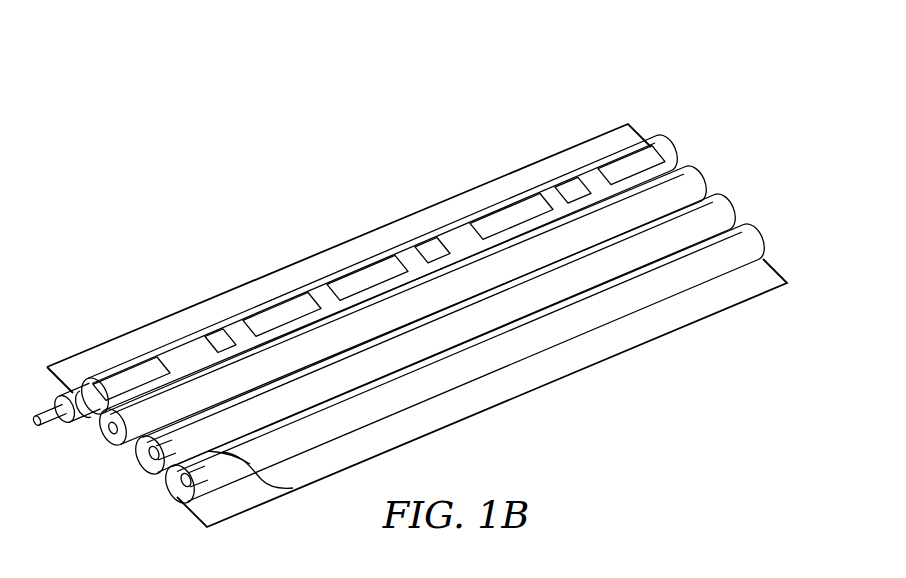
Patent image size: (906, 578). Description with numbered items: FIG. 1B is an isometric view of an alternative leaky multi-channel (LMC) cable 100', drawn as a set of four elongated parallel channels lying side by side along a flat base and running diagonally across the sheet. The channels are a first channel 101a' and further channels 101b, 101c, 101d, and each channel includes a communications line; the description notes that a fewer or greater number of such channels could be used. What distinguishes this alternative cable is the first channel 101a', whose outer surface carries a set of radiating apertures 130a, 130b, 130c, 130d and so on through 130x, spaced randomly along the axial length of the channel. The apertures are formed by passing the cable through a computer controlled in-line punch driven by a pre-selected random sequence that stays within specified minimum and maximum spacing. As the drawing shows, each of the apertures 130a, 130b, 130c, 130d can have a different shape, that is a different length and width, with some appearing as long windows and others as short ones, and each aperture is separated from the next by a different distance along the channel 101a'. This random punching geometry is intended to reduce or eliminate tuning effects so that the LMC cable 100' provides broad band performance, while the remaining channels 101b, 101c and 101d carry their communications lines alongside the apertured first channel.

The LMC cable 100' is at (417, 325).
The first channel 101a' is at (368, 253).
The channel 101b is at (692, 178).
The channel 101c is at (727, 210).
The channel 101d is at (757, 240).
The radiating aperture 130a is at (119, 378).
The radiating aperture 130b is at (208, 333).
The radiating aperture 130c is at (277, 313).
The radiating aperture 130d is at (353, 277).
The radiating aperture 130x is at (618, 165).